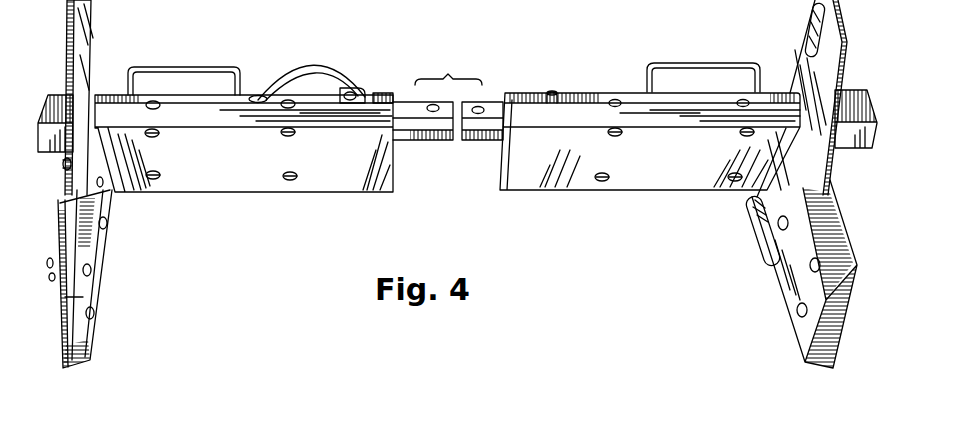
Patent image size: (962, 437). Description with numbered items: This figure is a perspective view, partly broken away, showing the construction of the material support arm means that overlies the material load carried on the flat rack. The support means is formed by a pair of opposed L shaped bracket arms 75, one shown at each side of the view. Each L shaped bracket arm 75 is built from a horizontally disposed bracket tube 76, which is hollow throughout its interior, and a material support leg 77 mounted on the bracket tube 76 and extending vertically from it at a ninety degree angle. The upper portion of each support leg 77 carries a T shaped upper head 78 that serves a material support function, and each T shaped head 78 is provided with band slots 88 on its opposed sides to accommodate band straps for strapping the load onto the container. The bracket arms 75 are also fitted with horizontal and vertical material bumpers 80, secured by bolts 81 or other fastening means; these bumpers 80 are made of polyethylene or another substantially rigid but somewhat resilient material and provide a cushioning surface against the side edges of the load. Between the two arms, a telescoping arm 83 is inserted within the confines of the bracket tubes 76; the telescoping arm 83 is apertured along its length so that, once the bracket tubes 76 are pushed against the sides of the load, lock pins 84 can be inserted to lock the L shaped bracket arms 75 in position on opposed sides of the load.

The L shaped bracket arm 75 is at (258, 90).
The bracket tube 76 is at (380, 92).
The material support leg 77 is at (68, 226).
The T shaped upper head 78 is at (88, 48).
The material bumper 80 is at (214, 183).
The bolt 81 is at (290, 180).
The telescoping arm 83 is at (418, 140).
The lock pin 84 is at (347, 90).
The band slot 88 is at (810, 22).